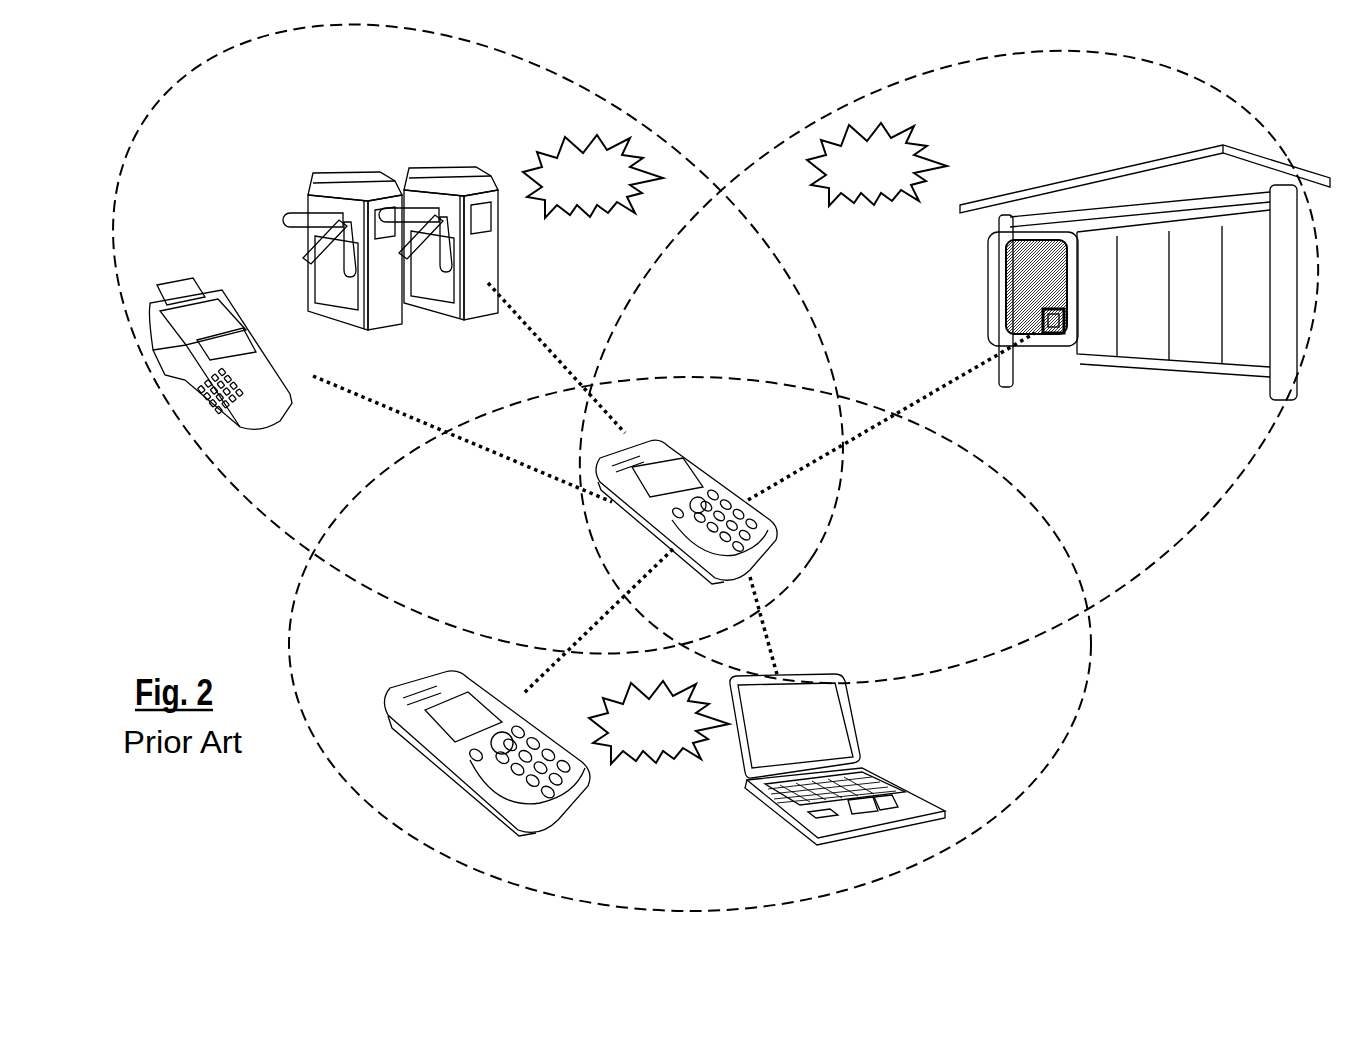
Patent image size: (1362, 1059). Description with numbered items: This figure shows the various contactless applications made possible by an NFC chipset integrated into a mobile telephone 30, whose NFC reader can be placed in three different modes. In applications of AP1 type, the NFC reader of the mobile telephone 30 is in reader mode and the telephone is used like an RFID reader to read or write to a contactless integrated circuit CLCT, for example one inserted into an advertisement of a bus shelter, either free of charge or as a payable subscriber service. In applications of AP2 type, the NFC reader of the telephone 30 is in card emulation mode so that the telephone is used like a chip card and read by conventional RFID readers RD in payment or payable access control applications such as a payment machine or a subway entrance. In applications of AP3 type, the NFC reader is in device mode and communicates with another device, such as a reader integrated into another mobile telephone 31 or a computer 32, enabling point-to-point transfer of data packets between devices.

The RFID reader RD is at (220, 260).
The mobile telephone 30 is at (688, 428).
The another mobile telephone 31 is at (488, 652).
The computer 32 is at (832, 655).
The contactless integrated circuit CLCT is at (1055, 344).
The application of AP1 type AP1 is at (913, 406).
The application of AP2 type AP2 is at (480, 392).
The application of AP3 type AP3 is at (690, 644).